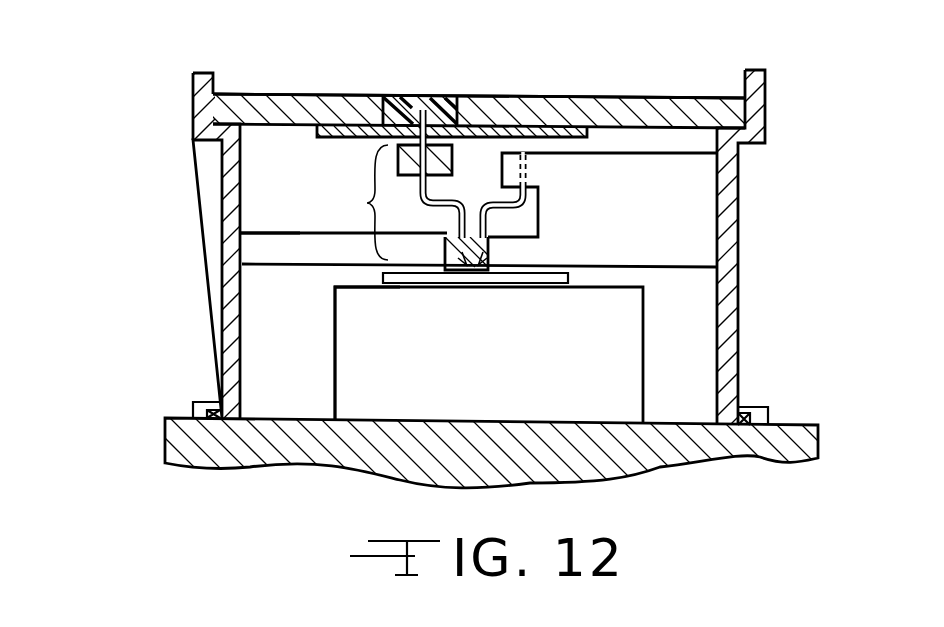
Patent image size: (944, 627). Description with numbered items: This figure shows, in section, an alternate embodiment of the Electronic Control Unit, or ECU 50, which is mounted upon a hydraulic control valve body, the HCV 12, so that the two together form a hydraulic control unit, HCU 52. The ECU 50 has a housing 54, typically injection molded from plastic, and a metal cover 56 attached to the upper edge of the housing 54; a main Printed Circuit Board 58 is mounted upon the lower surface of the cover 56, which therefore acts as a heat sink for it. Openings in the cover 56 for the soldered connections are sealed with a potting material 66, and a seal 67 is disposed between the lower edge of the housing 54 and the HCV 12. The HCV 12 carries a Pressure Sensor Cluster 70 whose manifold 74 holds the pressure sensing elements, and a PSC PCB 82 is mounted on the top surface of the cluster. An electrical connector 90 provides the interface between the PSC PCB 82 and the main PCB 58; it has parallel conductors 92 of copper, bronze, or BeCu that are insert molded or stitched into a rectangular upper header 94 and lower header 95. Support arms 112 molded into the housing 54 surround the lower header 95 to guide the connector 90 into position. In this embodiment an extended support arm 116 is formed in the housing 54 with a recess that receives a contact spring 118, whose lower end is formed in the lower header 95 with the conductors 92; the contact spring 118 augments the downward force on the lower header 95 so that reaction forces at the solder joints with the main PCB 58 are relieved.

The HCV 12 is at (208, 452).
The ECU 50 is at (180, 73).
The HCU 52 is at (609, 82).
The housing 54 is at (732, 233).
The metal cover 56 is at (507, 108).
The main Printed Circuit Board 58 is at (555, 139).
The potting material 66 is at (403, 105).
The seal 67 is at (742, 422).
The Pressure Sensor Cluster 70 is at (324, 333).
The manifold 74 is at (488, 360).
The PSC PCB 82 is at (527, 279).
The electrical connector 90 is at (355, 202).
The conductors 92 is at (443, 209).
The upper header 94 is at (440, 148).
The lower header 95 is at (451, 279).
The support arms 112 is at (295, 256).
The extended support arm 116 is at (692, 222).
The contact spring 118 is at (539, 222).